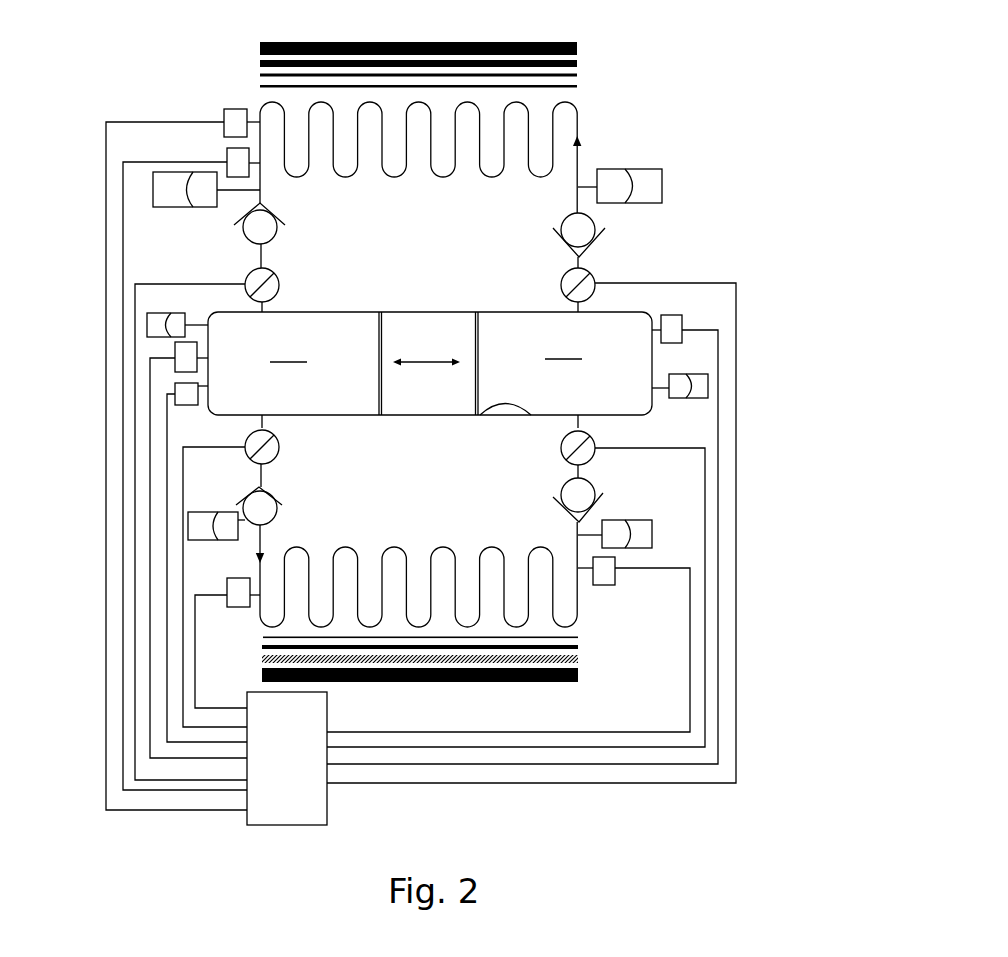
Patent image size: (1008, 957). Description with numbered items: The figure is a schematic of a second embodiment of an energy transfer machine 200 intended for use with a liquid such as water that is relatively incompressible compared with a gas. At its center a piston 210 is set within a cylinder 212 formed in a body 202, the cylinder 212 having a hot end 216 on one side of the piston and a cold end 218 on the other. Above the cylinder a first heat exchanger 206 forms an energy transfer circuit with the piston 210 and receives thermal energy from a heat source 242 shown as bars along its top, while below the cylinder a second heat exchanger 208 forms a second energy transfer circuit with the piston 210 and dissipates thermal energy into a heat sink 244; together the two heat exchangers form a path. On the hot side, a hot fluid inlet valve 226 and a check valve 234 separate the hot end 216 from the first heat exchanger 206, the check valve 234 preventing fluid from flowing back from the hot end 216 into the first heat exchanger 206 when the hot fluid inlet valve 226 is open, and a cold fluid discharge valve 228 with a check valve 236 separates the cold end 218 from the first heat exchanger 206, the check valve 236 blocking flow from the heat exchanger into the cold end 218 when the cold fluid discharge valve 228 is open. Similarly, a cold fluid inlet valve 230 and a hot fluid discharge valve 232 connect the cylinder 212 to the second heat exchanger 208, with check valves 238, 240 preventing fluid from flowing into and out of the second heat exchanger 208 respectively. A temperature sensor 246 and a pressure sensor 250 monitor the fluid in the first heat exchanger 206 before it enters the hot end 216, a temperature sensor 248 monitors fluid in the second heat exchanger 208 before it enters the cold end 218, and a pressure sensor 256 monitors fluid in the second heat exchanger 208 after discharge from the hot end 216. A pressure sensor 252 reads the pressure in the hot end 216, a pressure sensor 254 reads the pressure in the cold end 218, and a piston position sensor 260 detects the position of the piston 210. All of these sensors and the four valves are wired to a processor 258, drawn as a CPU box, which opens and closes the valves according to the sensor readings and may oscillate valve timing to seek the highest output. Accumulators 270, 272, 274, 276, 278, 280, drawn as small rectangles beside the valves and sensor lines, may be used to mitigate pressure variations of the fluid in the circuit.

The energy transfer machine 200 is at (402, 284).
The body 202 is at (413, 420).
The first heat exchanger 206 is at (577, 108).
The second heat exchanger 208 is at (570, 625).
The piston 210 is at (432, 330).
The cylinder 212 is at (487, 413).
The hot end 216 is at (285, 365).
The cold end 218 is at (564, 365).
The hot fluid inlet valve 226 is at (279, 291).
The cold fluid discharge valve 228 is at (594, 271).
The cold fluid inlet valve 230 is at (596, 441).
The hot fluid discharge valve 232 is at (279, 447).
The check valve 234 is at (280, 237).
The check valve 236 is at (597, 228).
The check valve 238 is at (596, 485).
The check valve 240 is at (278, 513).
The heat source 242 is at (577, 51).
The heat sink 244 is at (565, 686).
The temperature sensor 246 is at (243, 109).
The temperature sensor 248 is at (617, 585).
The pressure sensor 250 is at (228, 152).
The pressure sensor 252 is at (175, 350).
The pressure sensor 254 is at (681, 325).
The pressure sensor 256 is at (238, 607).
The processor 258 is at (327, 710).
The piston position sensor 260 is at (175, 384).
The accumulator 270 is at (662, 173).
The accumulator 272 is at (708, 386).
The accumulator 274 is at (652, 528).
The accumulator 276 is at (200, 512).
The accumulator 278 is at (148, 313).
The accumulator 280 is at (153, 185).